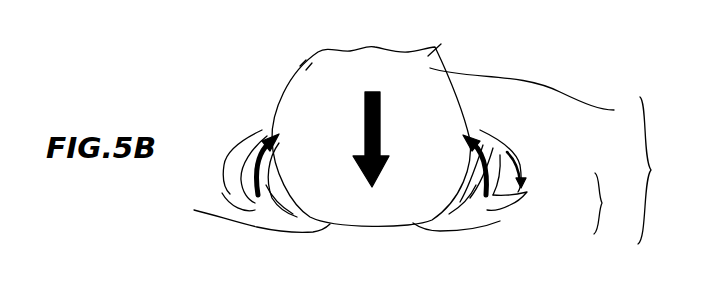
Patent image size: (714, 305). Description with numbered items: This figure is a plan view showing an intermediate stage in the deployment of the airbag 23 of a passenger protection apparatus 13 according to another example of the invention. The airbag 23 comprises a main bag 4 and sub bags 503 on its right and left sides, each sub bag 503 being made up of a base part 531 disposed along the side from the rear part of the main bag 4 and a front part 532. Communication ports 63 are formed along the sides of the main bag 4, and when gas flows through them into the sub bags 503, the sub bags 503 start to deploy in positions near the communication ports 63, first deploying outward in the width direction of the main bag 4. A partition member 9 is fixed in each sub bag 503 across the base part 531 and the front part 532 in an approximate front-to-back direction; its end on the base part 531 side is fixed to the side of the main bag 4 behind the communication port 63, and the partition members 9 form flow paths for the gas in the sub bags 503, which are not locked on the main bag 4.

The passenger protection apparatus 13 is at (247, 68).
The main bag 4 is at (528, 94).
The partition member 9 is at (340, 181).
The communication port 63 is at (486, 128).
The base part 531 is at (507, 135).
The front part 532 is at (510, 202).
The sub bag 503 is at (615, 203).
The airbag 23 is at (656, 170).